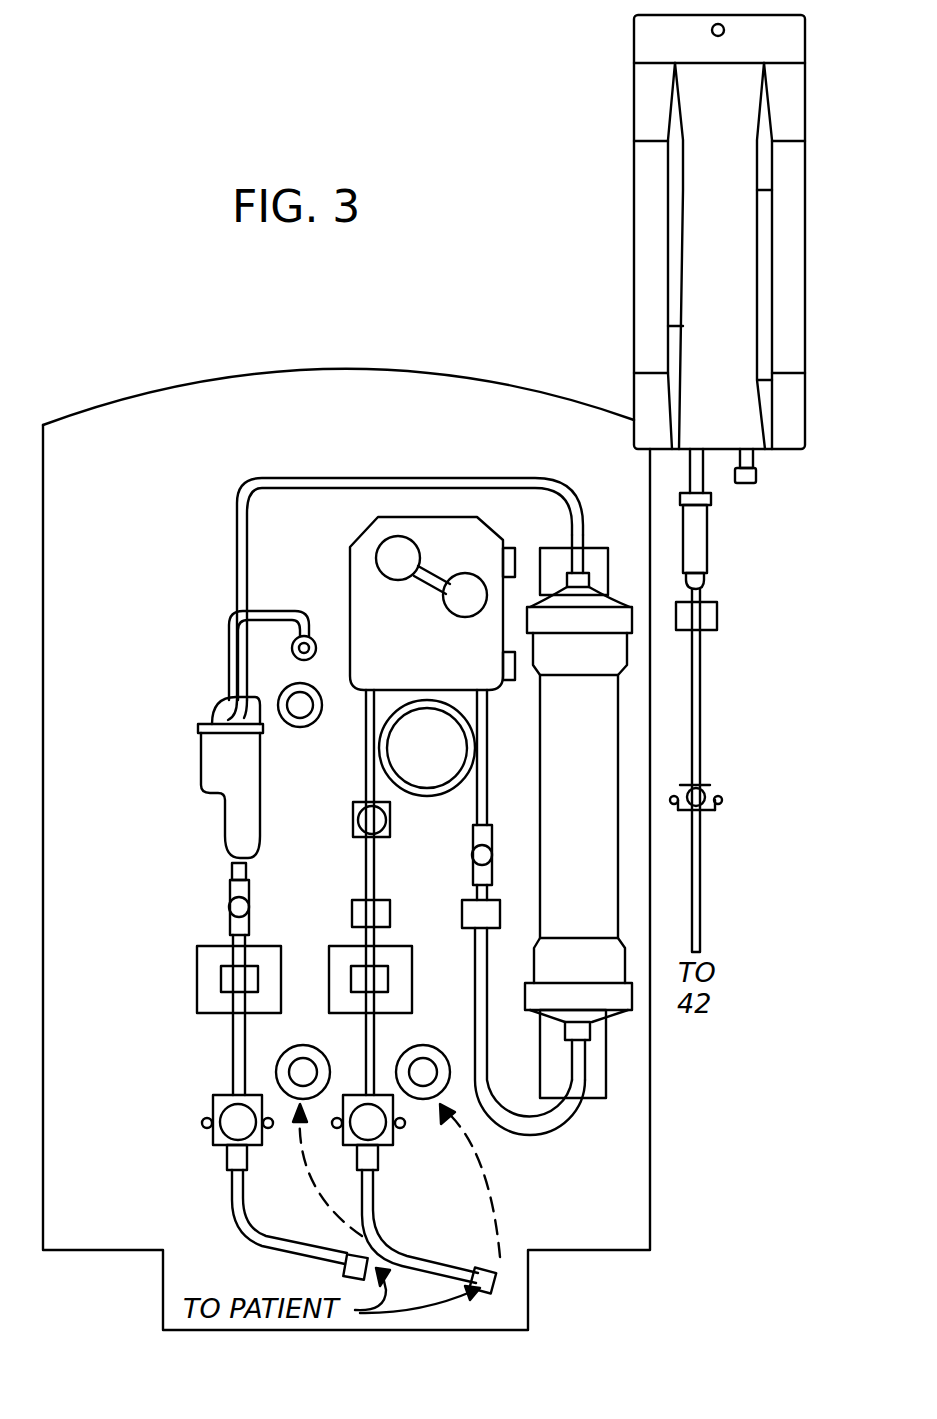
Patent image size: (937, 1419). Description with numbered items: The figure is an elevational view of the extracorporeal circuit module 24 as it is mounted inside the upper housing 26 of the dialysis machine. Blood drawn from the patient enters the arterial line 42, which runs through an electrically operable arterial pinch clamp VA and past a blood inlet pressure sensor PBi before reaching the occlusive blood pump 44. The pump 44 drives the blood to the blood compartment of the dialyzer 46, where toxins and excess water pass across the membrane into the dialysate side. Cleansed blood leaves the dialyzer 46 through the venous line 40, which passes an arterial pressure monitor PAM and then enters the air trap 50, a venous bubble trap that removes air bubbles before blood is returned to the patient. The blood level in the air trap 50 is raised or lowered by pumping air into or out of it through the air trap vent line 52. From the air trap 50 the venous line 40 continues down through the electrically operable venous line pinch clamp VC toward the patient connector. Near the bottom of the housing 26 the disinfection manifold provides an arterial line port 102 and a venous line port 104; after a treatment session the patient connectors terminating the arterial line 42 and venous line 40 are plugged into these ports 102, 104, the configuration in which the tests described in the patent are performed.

The extracorporeal circuit module 24 is at (448, 436).
The upper housing 26 is at (182, 378).
The venous line 40 is at (485, 480).
The arterial line 42 is at (548, 1137).
The blood pump 44 is at (444, 657).
The dialyzer 46 is at (602, 858).
The air trap 50 is at (250, 800).
The air trap vent line 52 is at (268, 612).
The arterial line port 102 is at (448, 1061).
The venous line port 104 is at (283, 1062).
The arterial pressure monitor PAM is at (352, 912).
The blood inlet pressure sensor PBi is at (462, 912).
The venous line pinch clamp VC is at (213, 1098).
The arterial valve clamp VA is at (393, 1152).